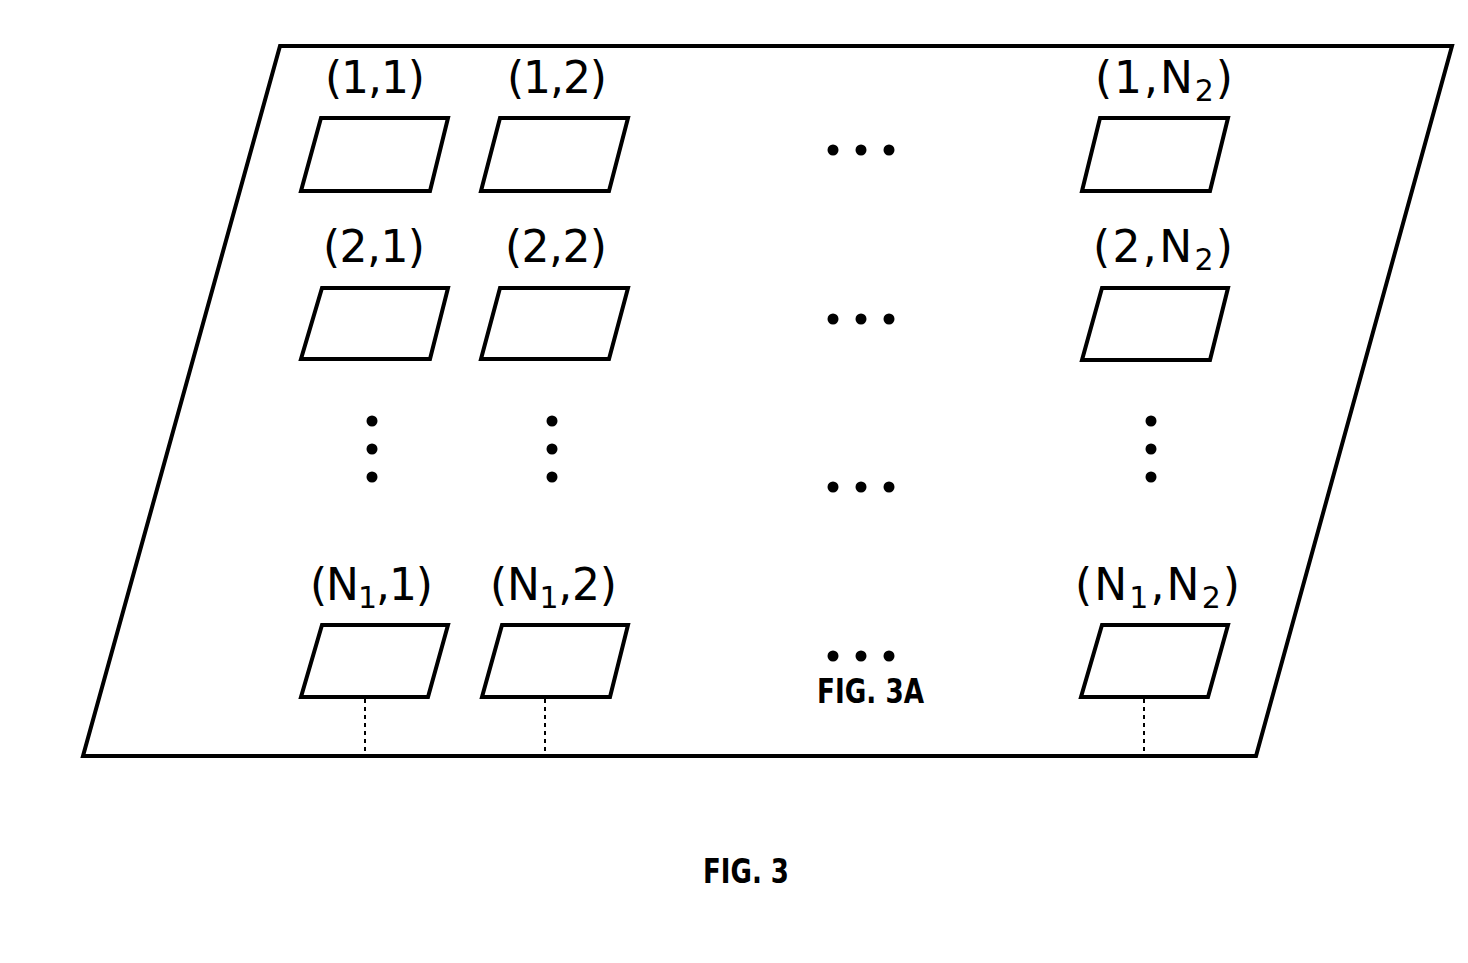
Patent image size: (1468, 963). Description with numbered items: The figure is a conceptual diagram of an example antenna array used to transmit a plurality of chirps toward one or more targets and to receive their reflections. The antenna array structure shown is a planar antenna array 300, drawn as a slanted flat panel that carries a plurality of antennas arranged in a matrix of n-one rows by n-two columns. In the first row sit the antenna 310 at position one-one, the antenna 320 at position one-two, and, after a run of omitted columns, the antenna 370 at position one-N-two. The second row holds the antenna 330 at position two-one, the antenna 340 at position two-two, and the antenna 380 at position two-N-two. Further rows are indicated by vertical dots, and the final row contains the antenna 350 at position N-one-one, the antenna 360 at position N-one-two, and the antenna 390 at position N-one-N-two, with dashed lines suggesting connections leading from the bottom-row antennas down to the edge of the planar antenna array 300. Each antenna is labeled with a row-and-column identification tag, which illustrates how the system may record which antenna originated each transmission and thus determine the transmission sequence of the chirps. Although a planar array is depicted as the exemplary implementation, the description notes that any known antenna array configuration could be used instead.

The planar antenna array 300 is at (207, 280).
The antenna 310 is at (310, 155).
The antenna 320 is at (623, 142).
The antenna 330 is at (308, 325).
The antenna 340 is at (622, 327).
The antenna 350 is at (310, 660).
The antenna 360 is at (620, 668).
The antenna 370 is at (1220, 148).
The antenna 380 is at (1220, 325).
The antenna 390 is at (1088, 670).